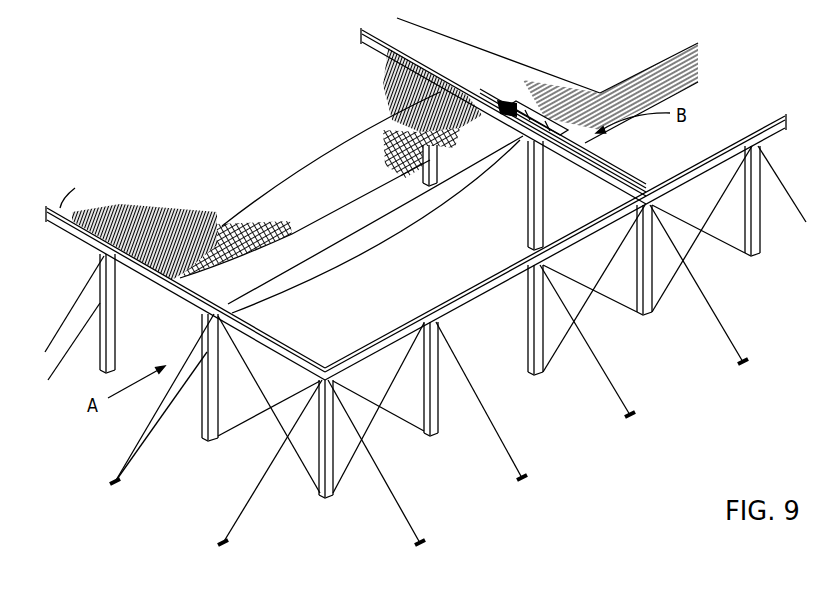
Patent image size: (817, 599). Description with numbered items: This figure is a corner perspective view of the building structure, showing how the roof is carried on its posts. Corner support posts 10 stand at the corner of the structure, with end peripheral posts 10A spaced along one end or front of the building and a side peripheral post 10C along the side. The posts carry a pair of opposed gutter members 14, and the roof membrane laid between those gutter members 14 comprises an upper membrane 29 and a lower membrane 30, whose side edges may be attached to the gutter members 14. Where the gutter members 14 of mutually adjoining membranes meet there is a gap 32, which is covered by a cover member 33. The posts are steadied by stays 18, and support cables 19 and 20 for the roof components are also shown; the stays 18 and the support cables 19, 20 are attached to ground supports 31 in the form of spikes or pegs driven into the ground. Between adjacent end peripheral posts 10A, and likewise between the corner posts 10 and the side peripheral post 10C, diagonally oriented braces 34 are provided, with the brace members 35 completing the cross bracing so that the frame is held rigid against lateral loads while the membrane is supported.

The support post 10 is at (331, 460).
The end peripheral post 10A is at (437, 397).
The side peripheral post 10C is at (113, 313).
The gutter member 14 is at (268, 332).
The stay 18 is at (178, 416).
The support cable 19 is at (357, 268).
The support cable 20 is at (317, 255).
The upper membrane 29 is at (327, 157).
The lower membrane 30 is at (317, 219).
The ground support 31 is at (121, 486).
The gap 32 is at (612, 152).
The cover member 33 is at (450, 66).
The diagonal brace 34 is at (238, 352).
The diagonal brace wire 35 is at (241, 358).